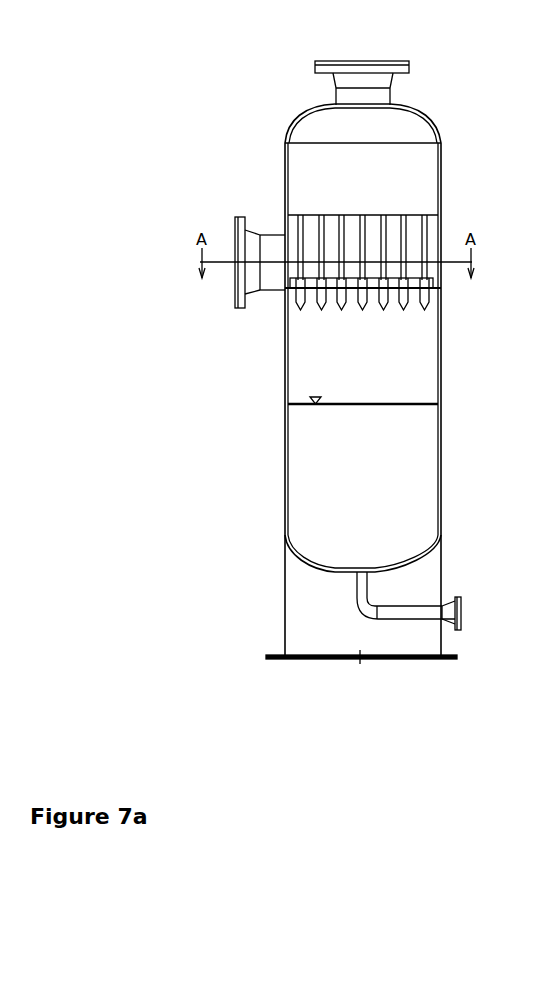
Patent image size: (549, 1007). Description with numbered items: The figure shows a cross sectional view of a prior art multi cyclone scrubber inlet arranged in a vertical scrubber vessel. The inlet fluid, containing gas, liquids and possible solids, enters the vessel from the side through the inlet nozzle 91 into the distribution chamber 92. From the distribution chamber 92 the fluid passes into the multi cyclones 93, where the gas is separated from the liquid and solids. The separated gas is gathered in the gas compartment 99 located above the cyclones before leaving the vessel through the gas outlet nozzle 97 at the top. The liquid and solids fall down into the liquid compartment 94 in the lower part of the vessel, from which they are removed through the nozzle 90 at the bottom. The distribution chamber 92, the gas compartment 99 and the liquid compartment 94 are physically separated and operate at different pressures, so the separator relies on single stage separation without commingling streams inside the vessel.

The nozzle 90 is at (462, 612).
The inlet nozzle 91 is at (237, 243).
The distribution chamber 92 is at (431, 240).
The multi cyclones 93 is at (295, 302).
The liquid compartment 94 is at (362, 361).
The gas outlet nozzle 97 is at (365, 60).
The gas compartment 99 is at (410, 182).